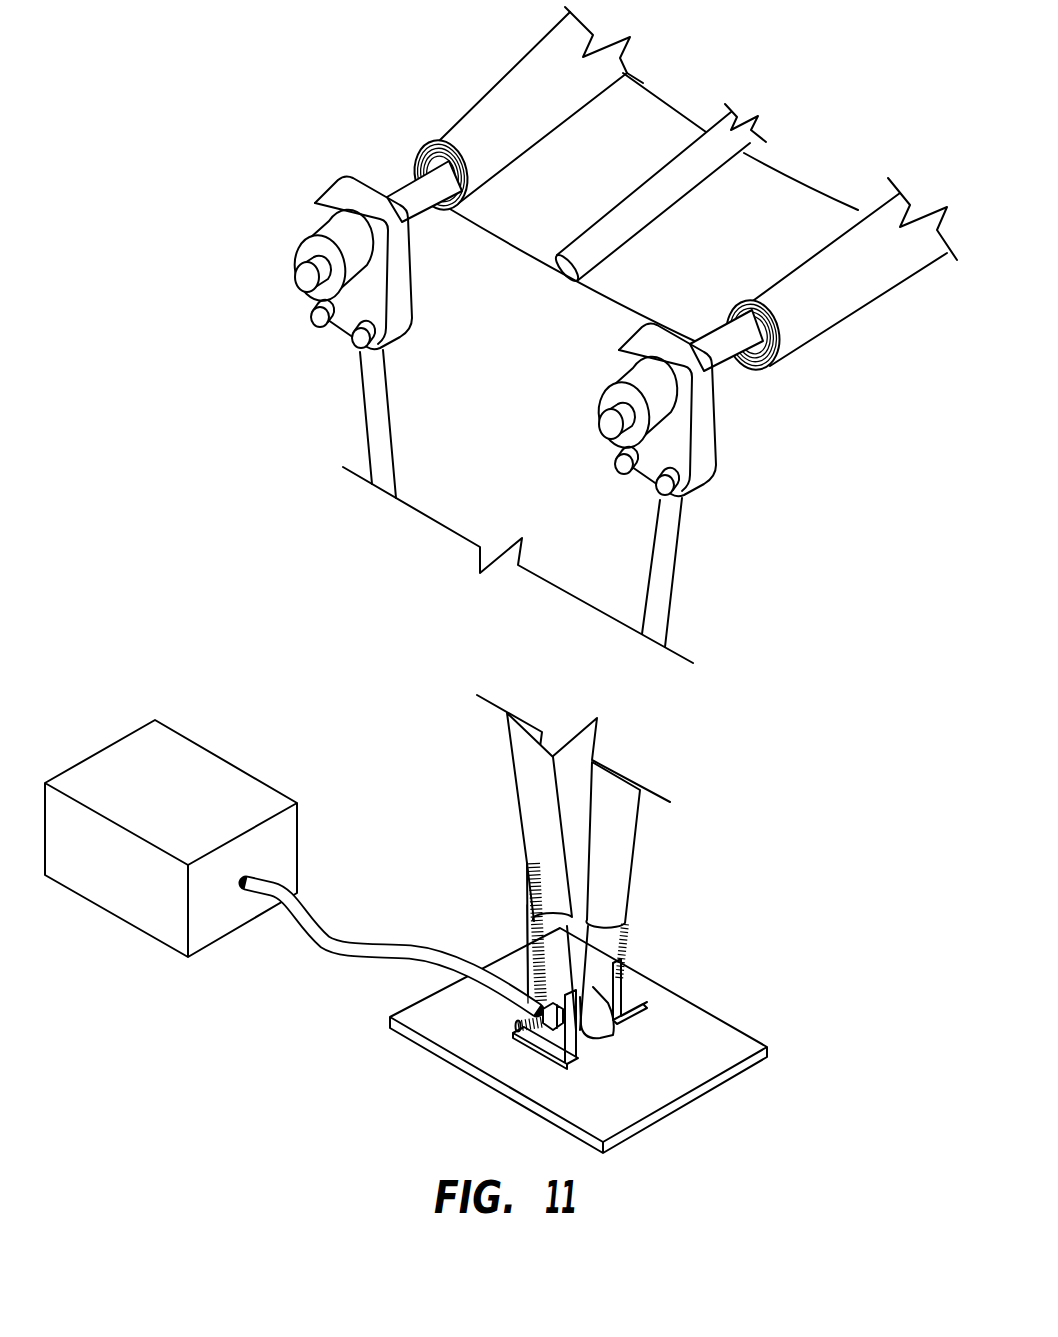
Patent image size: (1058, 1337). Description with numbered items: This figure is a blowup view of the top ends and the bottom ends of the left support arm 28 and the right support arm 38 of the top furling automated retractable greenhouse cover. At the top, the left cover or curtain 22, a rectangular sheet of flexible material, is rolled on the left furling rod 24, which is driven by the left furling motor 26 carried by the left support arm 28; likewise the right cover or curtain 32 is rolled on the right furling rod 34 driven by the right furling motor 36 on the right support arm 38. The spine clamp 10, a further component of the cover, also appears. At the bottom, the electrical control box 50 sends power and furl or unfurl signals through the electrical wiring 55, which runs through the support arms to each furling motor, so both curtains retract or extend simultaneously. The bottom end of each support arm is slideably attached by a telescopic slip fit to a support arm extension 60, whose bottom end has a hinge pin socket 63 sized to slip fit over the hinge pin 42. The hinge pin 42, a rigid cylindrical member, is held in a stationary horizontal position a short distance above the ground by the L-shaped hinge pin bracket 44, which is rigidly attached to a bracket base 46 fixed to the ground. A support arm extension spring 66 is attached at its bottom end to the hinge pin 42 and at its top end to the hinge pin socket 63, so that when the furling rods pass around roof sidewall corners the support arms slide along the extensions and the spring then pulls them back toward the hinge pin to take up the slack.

The spine clamp 10 is at (623, 213).
The left cover or curtain 22 is at (504, 82).
The left furling rod 24 is at (402, 193).
The left furling motor 26 is at (300, 240).
The left support arm 28 is at (367, 392).
The right cover or curtain 32 is at (878, 288).
The right furling rod 34 is at (723, 370).
The right furling motor 36 is at (708, 433).
The right support arm 38 is at (668, 563).
The hinge pin 42 is at (520, 1028).
The hinge pin bracket 44 is at (562, 1060).
The bracket base 46 is at (483, 1082).
The electrical control box 50 is at (110, 908).
The electrical wiring 55 is at (358, 943).
The support arm extension 60 is at (563, 948).
The hinge pin socket 63 is at (530, 865).
The support arm extension spring 66 is at (523, 910).